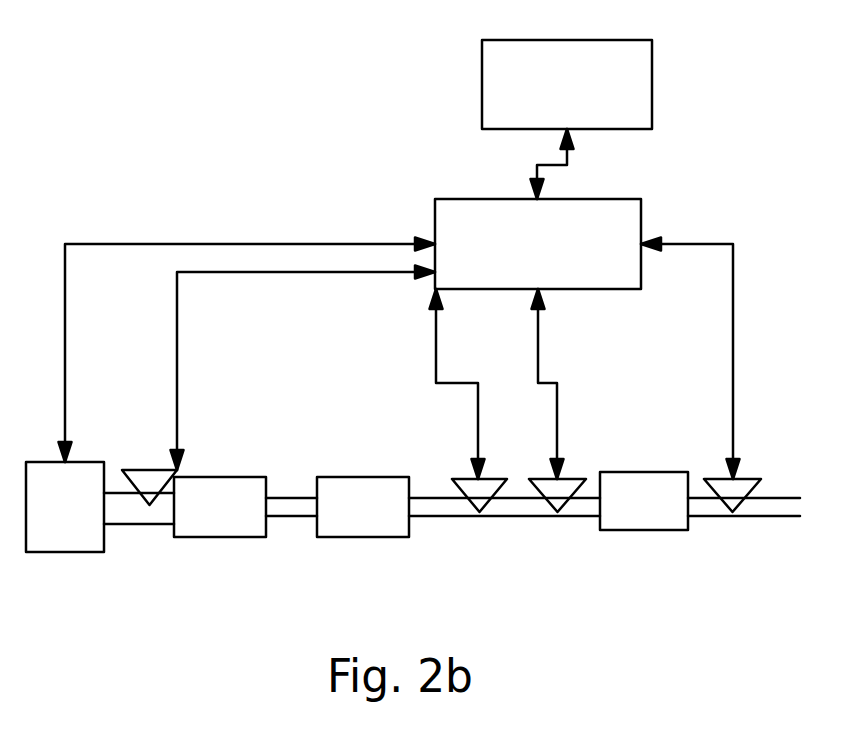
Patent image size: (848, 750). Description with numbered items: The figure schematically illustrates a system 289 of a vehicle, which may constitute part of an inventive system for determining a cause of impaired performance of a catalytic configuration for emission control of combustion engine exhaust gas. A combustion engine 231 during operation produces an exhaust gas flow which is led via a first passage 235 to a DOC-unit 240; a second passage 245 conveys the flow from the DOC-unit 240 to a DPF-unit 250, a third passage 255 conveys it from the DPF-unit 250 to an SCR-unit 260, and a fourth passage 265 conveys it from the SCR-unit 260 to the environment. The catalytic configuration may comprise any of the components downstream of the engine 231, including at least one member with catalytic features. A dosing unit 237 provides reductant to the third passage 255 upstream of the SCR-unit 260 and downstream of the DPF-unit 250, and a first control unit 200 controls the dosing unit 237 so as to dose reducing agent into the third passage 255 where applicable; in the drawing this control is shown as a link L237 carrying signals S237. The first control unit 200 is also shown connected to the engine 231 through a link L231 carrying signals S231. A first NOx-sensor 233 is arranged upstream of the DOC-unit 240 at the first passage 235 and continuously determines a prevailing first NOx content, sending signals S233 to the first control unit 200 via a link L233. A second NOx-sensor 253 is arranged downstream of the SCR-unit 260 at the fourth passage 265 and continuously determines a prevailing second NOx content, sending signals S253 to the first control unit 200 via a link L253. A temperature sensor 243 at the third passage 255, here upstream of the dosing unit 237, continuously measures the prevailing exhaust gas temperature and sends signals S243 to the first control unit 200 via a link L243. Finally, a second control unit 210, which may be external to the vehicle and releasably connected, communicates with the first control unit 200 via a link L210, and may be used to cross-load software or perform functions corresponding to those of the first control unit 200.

The second control unit 210 is at (546, 97).
The first control unit 200 is at (517, 257).
The combustion engine 231 is at (44, 520).
The first NOx-sensor 233 is at (122, 480).
The first passage 235 is at (138, 525).
The DOC-unit 240 is at (199, 520).
The temperature sensor 243 is at (455, 480).
The second passage 245 is at (282, 516).
The DPF-unit 250 is at (342, 520).
The dosing unit 237 is at (583, 480).
The third passage 255 is at (460, 516).
The SCR-unit 260 is at (623, 514).
The second NOx-sensor 253 is at (750, 476).
The fourth passage 265 is at (708, 516).
The system 289 is at (362, 128).
The link L210 is at (567, 165).
The link L231 is at (203, 246).
The link L233 is at (179, 325).
The link L243 is at (436, 333).
The link L237 is at (538, 336).
The link L253 is at (733, 320).
The signals S231 is at (247, 336).
The signals S233 is at (303, 368).
The signals S243 is at (424, 384).
The signals S237 is at (578, 384).
The signals S253 is at (723, 359).